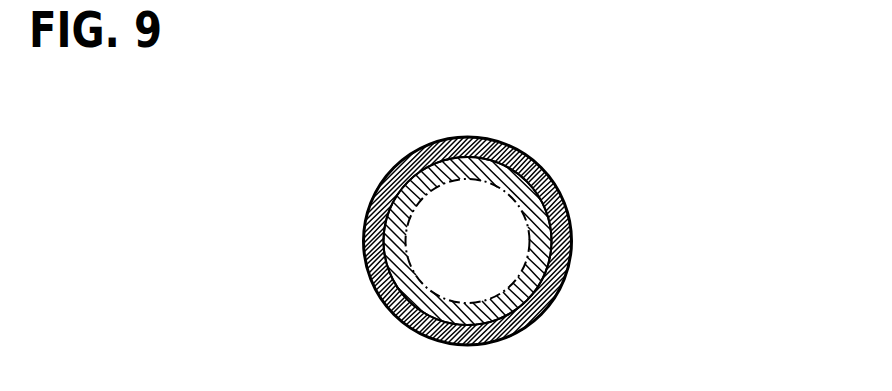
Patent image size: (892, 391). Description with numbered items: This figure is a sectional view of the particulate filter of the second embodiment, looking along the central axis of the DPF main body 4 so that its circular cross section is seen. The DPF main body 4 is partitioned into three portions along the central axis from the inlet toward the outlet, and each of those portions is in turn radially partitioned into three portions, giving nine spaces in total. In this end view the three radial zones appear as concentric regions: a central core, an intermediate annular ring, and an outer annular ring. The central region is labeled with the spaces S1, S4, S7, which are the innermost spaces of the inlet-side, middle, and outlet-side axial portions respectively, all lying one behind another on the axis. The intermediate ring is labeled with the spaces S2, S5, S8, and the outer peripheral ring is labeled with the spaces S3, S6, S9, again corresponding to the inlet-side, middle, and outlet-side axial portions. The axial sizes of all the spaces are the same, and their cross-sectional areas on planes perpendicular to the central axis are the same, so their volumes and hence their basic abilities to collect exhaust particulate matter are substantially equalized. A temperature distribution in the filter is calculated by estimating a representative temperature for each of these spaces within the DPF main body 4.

The DPF main body 4 is at (383, 167).
The space S1 is at (603, 241).
The space S4 is at (603, 241).
The space S7 is at (470, 240).
The space S2 is at (592, 241).
The space S5 is at (592, 241).
The space S8 is at (552, 237).
The space S3 is at (582, 241).
The space S6 is at (582, 241).
The space S9 is at (563, 270).